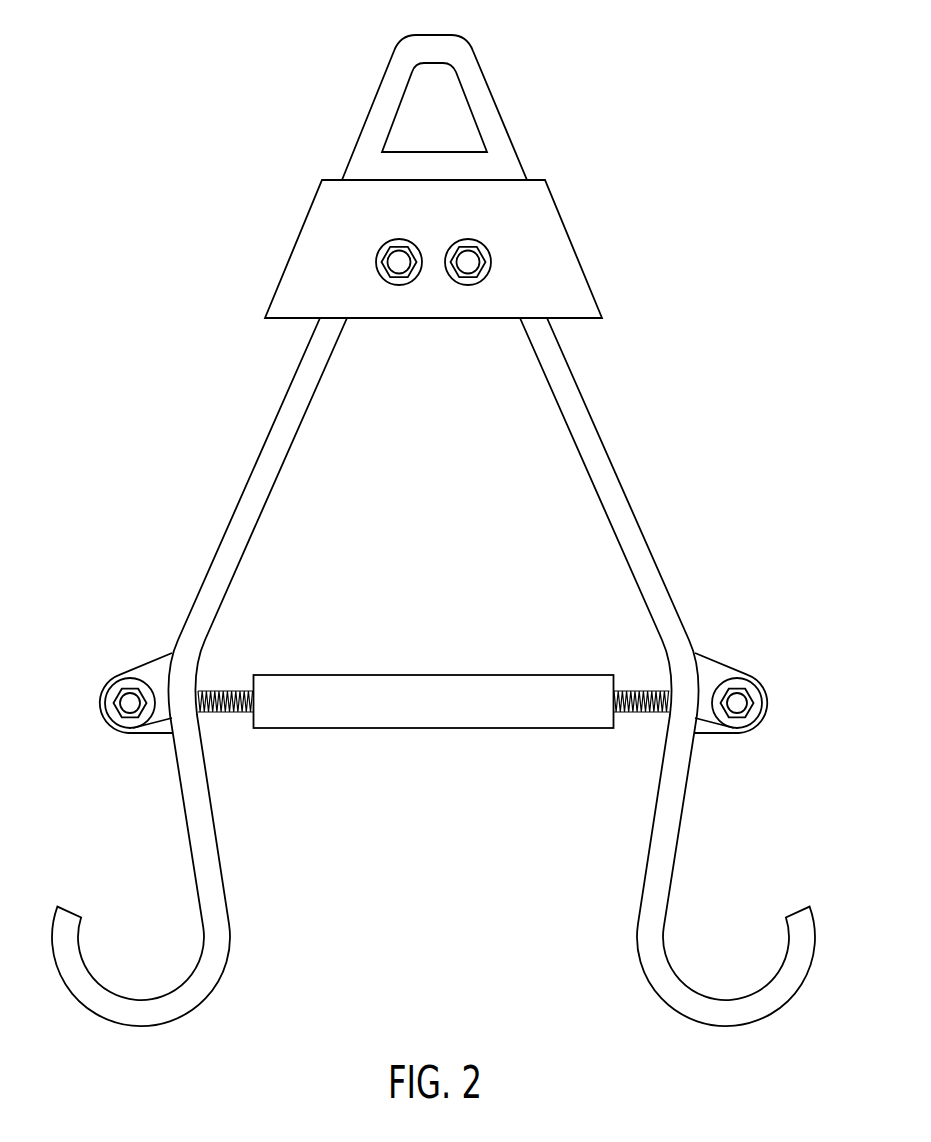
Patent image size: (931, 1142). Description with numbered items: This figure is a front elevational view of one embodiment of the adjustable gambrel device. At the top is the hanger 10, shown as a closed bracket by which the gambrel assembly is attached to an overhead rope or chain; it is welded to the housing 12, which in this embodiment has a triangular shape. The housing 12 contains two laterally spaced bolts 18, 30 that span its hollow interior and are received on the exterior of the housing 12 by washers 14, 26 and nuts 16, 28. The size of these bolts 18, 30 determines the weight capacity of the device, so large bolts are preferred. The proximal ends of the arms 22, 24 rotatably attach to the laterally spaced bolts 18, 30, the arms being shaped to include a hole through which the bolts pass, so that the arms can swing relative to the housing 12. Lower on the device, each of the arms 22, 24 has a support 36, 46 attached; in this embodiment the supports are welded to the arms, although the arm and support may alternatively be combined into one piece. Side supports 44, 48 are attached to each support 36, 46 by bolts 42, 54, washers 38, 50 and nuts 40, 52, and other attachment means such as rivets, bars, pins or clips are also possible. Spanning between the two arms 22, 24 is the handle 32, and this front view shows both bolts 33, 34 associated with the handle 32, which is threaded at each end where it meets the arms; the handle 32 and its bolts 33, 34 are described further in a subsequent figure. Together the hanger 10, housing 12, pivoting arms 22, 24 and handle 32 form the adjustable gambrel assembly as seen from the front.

The hanger 10 is at (455, 53).
The housing 12 is at (540, 202).
The washer 14 is at (483, 243).
The nut 16 is at (483, 263).
The bolt 18 is at (470, 263).
The arm 22 is at (295, 407).
The arm 24 is at (585, 427).
The washer 26 is at (391, 245).
The nut 28 is at (384, 262).
The bolt 30 is at (399, 263).
The handle 32 is at (397, 688).
The bolt 33 is at (228, 690).
The bolt 34 is at (636, 691).
The support 36 is at (713, 675).
The washer 38 is at (757, 690).
The nut 40 is at (750, 703).
The bolt 42 is at (737, 706).
The side support 44 is at (702, 731).
The support 46 is at (153, 673).
The side support 48 is at (165, 731).
The washer 50 is at (110, 690).
The nut 52 is at (117, 703).
The bolt 54 is at (130, 706).